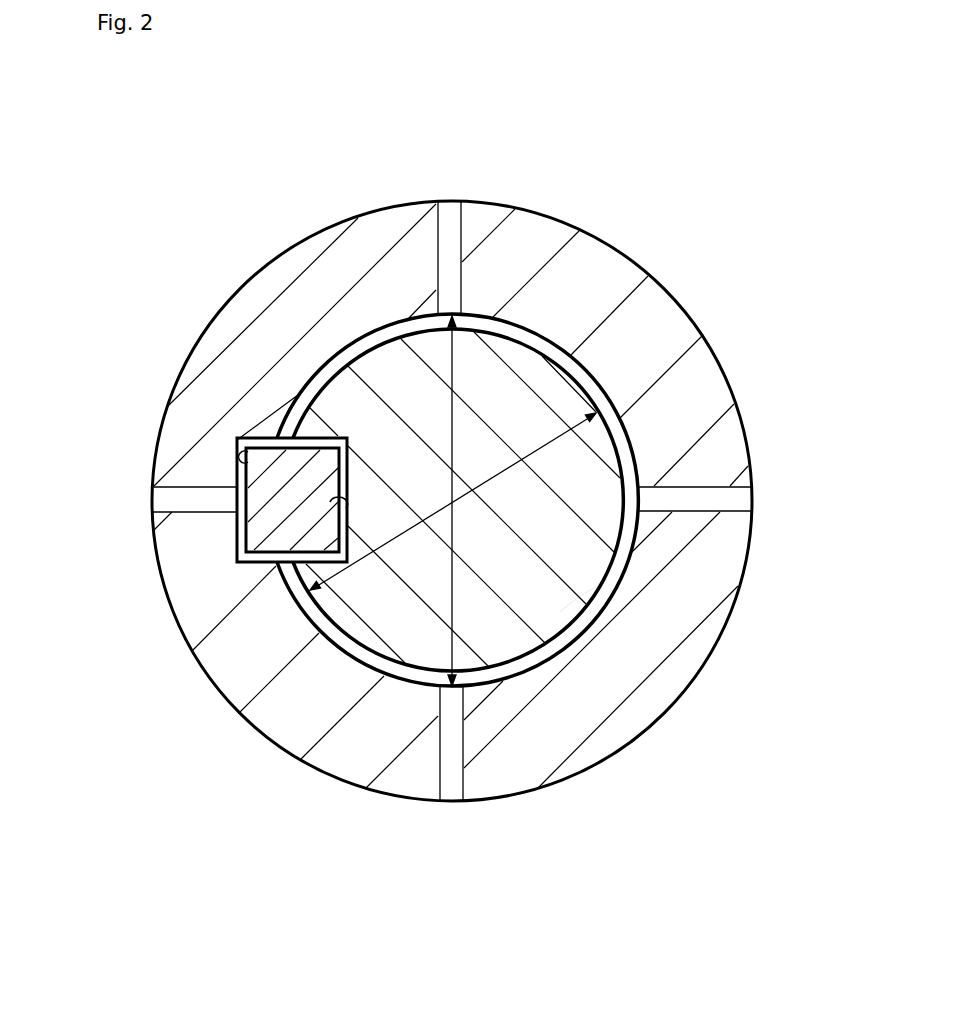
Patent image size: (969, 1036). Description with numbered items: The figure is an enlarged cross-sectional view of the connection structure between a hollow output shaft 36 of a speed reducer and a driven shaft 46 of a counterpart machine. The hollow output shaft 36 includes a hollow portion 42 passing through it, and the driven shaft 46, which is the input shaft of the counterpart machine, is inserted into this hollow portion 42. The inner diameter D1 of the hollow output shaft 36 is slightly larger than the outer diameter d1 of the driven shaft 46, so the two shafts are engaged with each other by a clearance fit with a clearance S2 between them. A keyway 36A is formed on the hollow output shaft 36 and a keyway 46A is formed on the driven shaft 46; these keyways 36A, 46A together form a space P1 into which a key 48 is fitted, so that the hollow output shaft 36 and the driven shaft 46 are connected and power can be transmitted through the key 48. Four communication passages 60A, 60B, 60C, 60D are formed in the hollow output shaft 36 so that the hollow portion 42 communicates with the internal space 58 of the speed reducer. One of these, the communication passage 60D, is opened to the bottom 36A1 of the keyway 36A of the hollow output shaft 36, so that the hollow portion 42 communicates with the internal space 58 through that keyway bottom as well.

The internal space 58 is at (553, 80).
The hollow output shaft 36 is at (270, 308).
The keyway 36A is at (260, 516).
The bottom of the keyway 36A1 is at (278, 443).
The hollow portion 42 is at (398, 328).
The driven shaft 46 is at (481, 368).
The keyway 46A is at (345, 508).
The key 48 is at (263, 477).
The communication passage 60A is at (448, 222).
The communication passage 60B is at (723, 500).
The communication passage 60C is at (463, 790).
The communication passage 60D is at (154, 512).
The space P1 is at (285, 472).
The clearance S2 is at (578, 627).
The inner diameter D1 is at (455, 436).
The outer diameter d1 is at (508, 470).